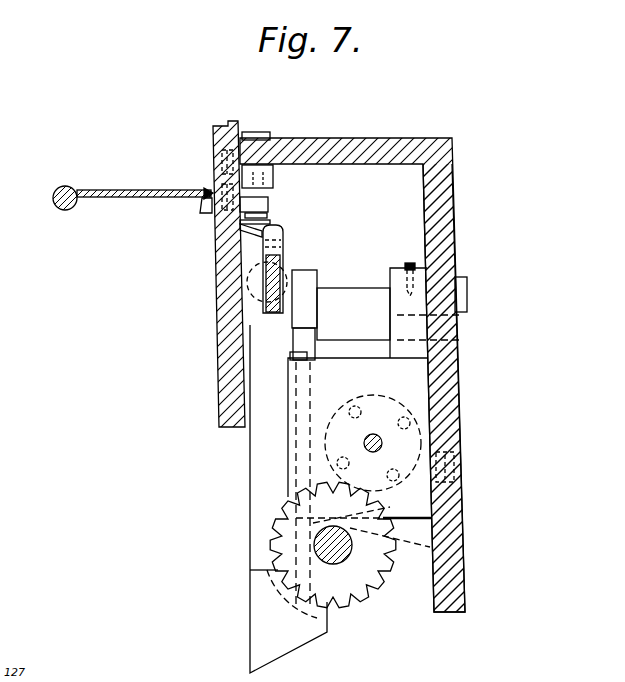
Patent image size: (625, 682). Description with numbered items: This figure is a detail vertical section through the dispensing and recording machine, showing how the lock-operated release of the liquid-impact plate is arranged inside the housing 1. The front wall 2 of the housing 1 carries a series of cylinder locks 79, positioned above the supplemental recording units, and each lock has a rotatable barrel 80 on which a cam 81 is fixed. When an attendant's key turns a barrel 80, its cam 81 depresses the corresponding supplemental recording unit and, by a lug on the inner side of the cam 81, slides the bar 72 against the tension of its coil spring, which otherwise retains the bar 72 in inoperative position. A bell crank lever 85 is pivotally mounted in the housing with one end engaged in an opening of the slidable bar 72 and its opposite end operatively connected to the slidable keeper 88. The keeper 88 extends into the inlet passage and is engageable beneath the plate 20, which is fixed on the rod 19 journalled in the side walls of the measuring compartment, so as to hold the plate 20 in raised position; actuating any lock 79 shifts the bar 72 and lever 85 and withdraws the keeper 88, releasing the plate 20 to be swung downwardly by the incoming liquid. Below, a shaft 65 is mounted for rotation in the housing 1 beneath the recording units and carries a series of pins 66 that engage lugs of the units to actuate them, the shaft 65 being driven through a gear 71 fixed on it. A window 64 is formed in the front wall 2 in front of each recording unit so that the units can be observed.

The housing 1 is at (461, 212).
The front wall 2 is at (448, 397).
The rod 19 is at (70, 188).
The plate 20 is at (134, 190).
The window 64 is at (453, 467).
The shaft 65 is at (350, 607).
The pins 66 is at (430, 547).
The gear 71 is at (392, 581).
The bar 72 is at (274, 321).
The cylinder locks 79 is at (397, 278).
The rotatable barrels 80 is at (356, 305).
The cams 81 is at (312, 290).
The bell crank lever 85 is at (257, 238).
The slidable keeper 88 is at (268, 203).